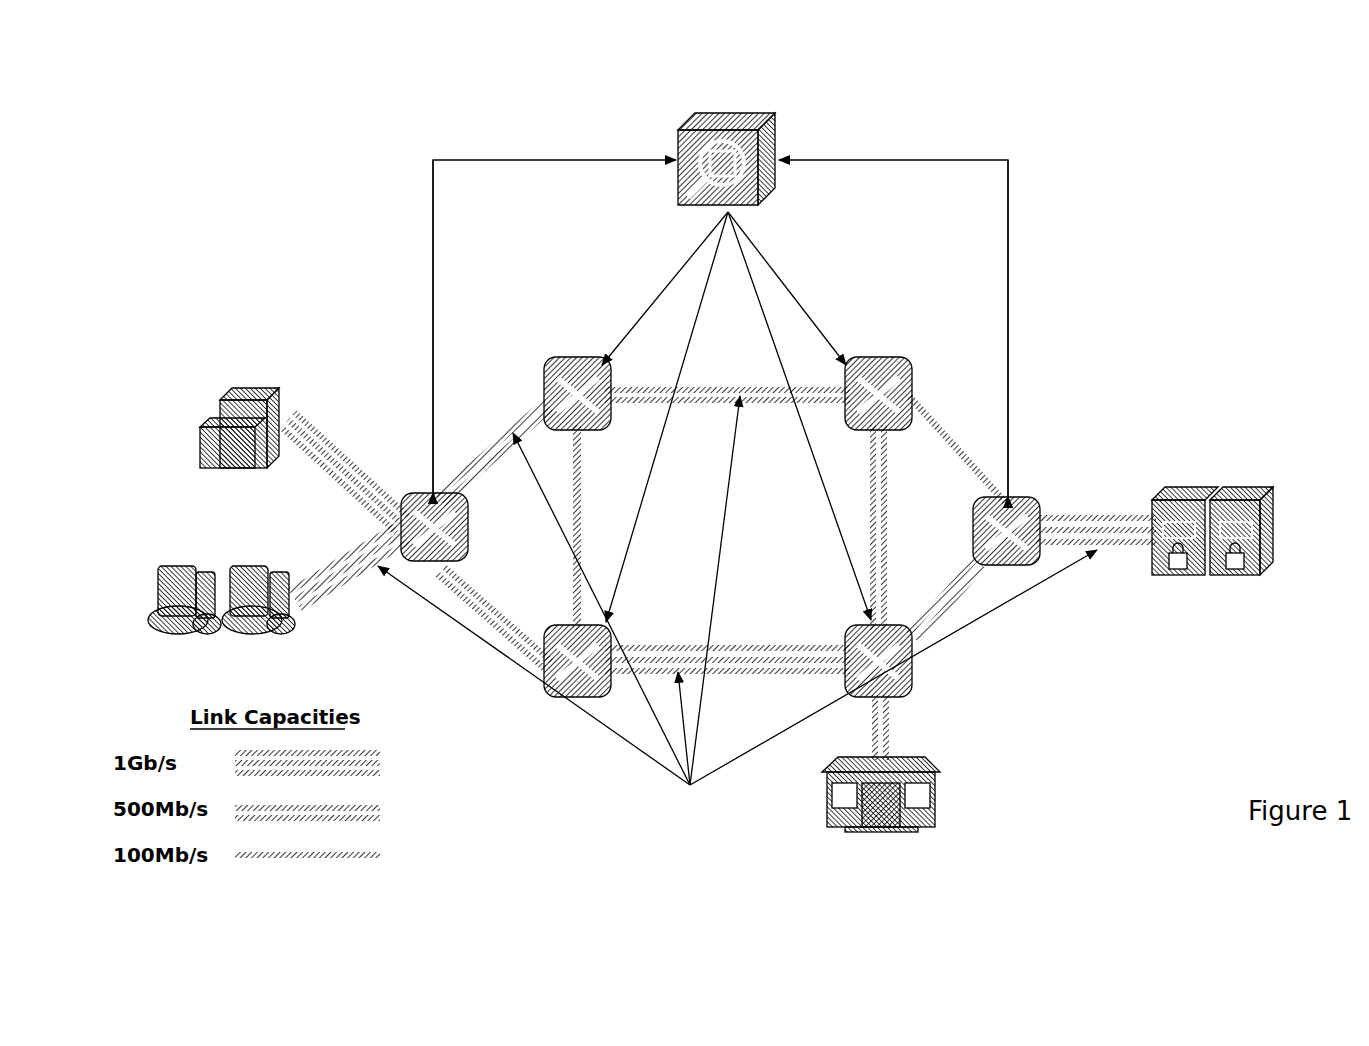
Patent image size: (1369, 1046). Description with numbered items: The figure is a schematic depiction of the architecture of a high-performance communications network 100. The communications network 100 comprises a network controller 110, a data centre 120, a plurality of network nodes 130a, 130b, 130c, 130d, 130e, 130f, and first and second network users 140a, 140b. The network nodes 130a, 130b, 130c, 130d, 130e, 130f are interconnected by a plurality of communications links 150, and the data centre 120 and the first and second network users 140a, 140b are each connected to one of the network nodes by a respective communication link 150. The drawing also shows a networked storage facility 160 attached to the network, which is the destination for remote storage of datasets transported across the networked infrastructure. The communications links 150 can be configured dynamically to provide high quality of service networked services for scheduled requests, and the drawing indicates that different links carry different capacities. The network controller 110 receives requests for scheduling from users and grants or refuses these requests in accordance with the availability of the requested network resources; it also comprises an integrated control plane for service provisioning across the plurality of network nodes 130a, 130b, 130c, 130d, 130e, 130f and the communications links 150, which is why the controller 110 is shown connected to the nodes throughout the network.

The high-performance communications network 100 is at (236, 113).
The network controller 110 is at (731, 111).
The data centre 120 is at (145, 572).
The network node 130a is at (408, 490).
The network node 130b is at (575, 352).
The network node 130c is at (570, 693).
The network node 130d is at (880, 352).
The network node 130e is at (908, 672).
The network node 130f is at (1022, 498).
The first network user 140a is at (940, 795).
The second network user 140b is at (197, 425).
The communications links 150 is at (737, 615).
The networked storage facility 160 is at (1243, 487).